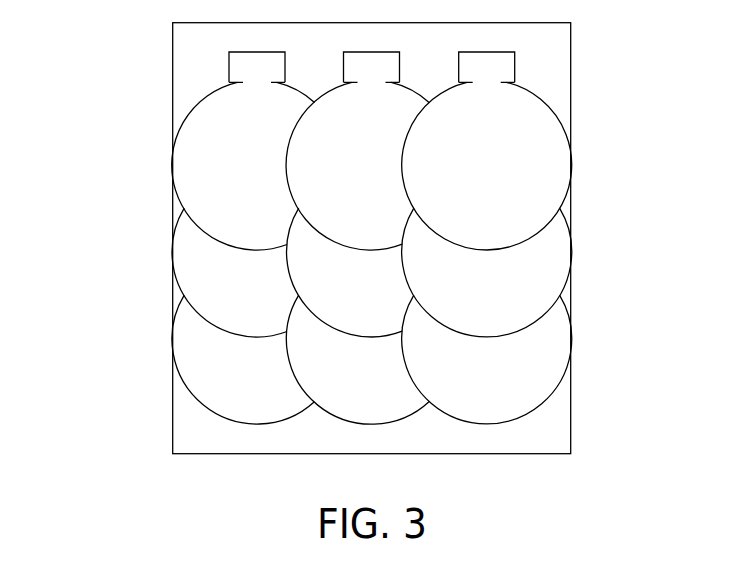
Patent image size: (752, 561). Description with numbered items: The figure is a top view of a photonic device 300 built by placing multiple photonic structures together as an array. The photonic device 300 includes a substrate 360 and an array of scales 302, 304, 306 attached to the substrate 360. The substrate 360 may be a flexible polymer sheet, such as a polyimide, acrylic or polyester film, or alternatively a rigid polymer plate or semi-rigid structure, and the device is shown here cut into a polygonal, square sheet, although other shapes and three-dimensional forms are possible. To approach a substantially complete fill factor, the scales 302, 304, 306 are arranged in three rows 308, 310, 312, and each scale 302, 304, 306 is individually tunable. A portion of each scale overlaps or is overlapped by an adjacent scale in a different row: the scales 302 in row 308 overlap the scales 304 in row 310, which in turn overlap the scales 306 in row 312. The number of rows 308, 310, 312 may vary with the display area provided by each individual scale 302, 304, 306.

The photonic device 300 is at (594, 81).
The scale 302 is at (189, 118).
The scale 304 is at (190, 272).
The scale 306 is at (196, 397).
The row 308 is at (166, 160).
The row 310 is at (166, 250).
The row 312 is at (166, 340).
The substrate 360 is at (558, 430).